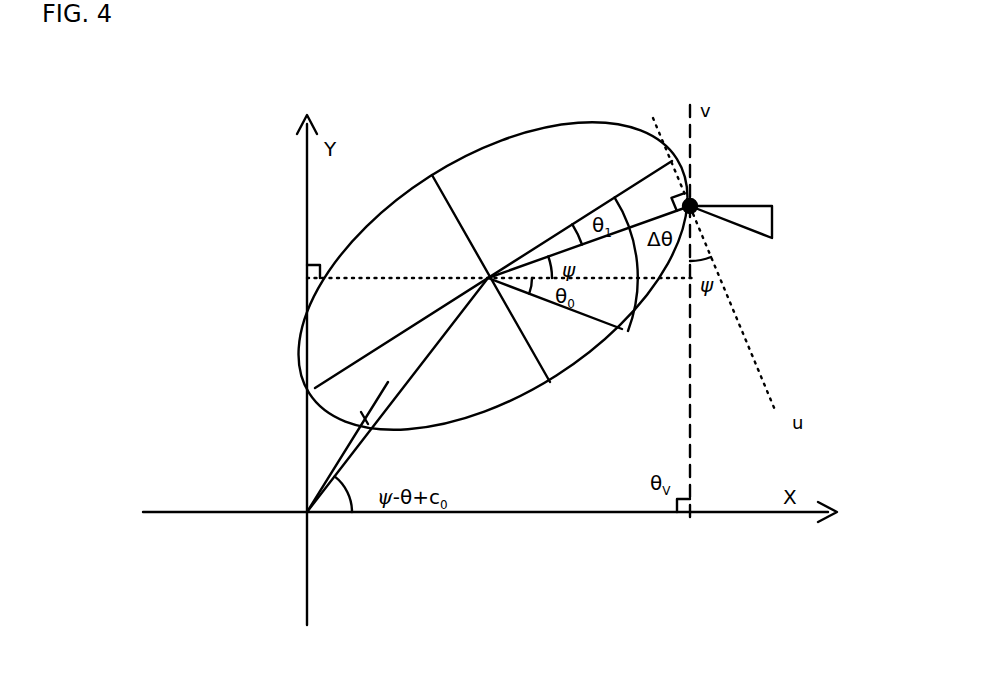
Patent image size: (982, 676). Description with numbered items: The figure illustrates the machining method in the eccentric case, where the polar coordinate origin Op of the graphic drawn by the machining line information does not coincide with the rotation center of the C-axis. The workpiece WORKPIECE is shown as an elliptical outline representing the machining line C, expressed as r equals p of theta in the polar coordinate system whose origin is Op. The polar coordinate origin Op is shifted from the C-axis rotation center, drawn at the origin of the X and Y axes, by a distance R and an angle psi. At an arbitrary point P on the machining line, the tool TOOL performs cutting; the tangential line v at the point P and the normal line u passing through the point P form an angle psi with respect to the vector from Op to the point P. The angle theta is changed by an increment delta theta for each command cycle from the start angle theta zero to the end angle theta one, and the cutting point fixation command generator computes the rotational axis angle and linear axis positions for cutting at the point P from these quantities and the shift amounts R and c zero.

The workpiece WORKPIECE is at (302, 370).
The tool TOOL is at (772, 214).
The point P on the machining line P is at (698, 194).
The polar coordinate origin Op is at (498, 336).
The distance R is at (347, 447).